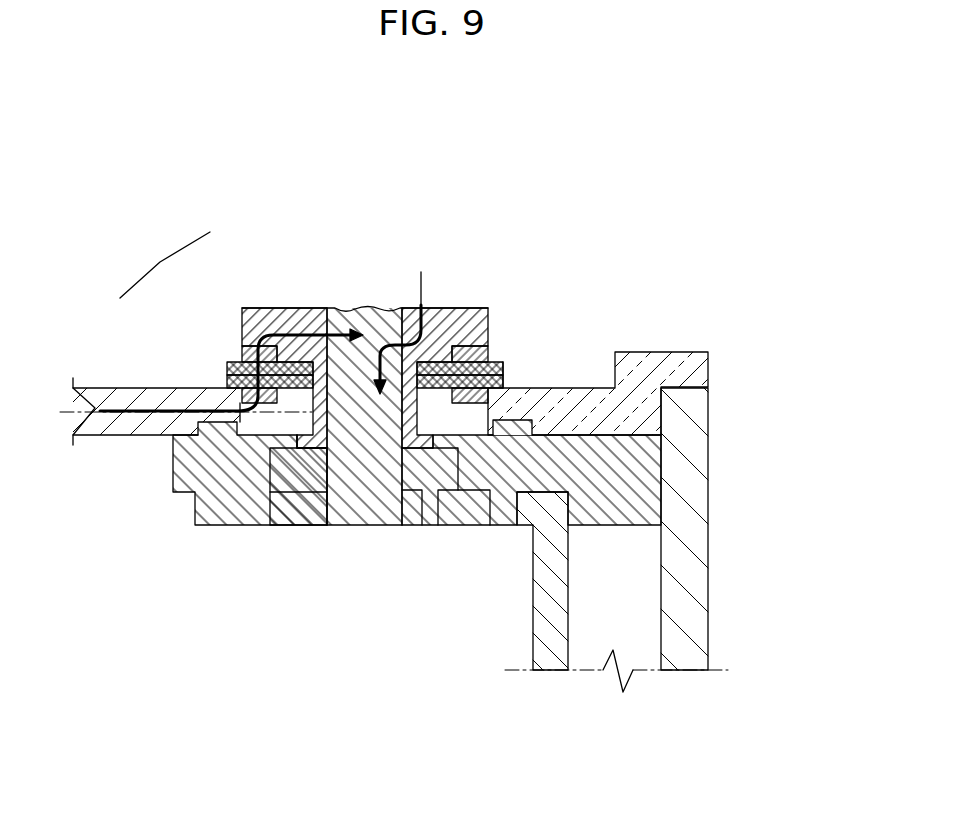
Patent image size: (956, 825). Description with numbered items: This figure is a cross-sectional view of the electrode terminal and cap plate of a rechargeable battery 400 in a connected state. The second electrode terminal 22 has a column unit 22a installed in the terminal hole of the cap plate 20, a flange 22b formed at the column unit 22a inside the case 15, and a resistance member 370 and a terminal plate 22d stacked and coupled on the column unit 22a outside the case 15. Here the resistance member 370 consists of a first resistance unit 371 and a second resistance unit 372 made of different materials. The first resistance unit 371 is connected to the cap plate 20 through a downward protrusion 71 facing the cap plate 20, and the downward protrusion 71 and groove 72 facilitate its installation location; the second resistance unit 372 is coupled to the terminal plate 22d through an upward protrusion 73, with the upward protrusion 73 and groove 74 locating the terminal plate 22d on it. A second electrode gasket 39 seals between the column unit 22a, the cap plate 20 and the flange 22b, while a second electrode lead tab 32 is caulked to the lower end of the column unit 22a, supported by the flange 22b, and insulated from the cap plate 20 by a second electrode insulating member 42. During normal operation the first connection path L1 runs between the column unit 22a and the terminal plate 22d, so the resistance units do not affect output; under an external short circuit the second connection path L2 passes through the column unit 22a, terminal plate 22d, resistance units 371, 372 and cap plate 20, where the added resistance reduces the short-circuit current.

The rechargeable battery 400 is at (459, 97).
The second electrode terminal 22 is at (289, 399).
The column unit 22a is at (360, 436).
The flange 22b is at (283, 470).
The terminal plate 22d is at (282, 324).
The resistance member 370 is at (165, 265).
The first resistance unit 371 is at (242, 378).
The second resistance unit 372 is at (230, 360).
The downward protrusion 71 is at (474, 380).
The groove 72 is at (492, 373).
The upward protrusion 73 is at (480, 356).
The groove 74 is at (462, 348).
The cap plate 20 is at (632, 410).
The second electrode insulating member 42 is at (642, 488).
The second electrode gasket 39 is at (312, 448).
The second electrode lead tab 32 is at (552, 652).
The case 15 is at (683, 637).
The first connection path L1 is at (402, 318).
The second connection path L2 is at (138, 408).